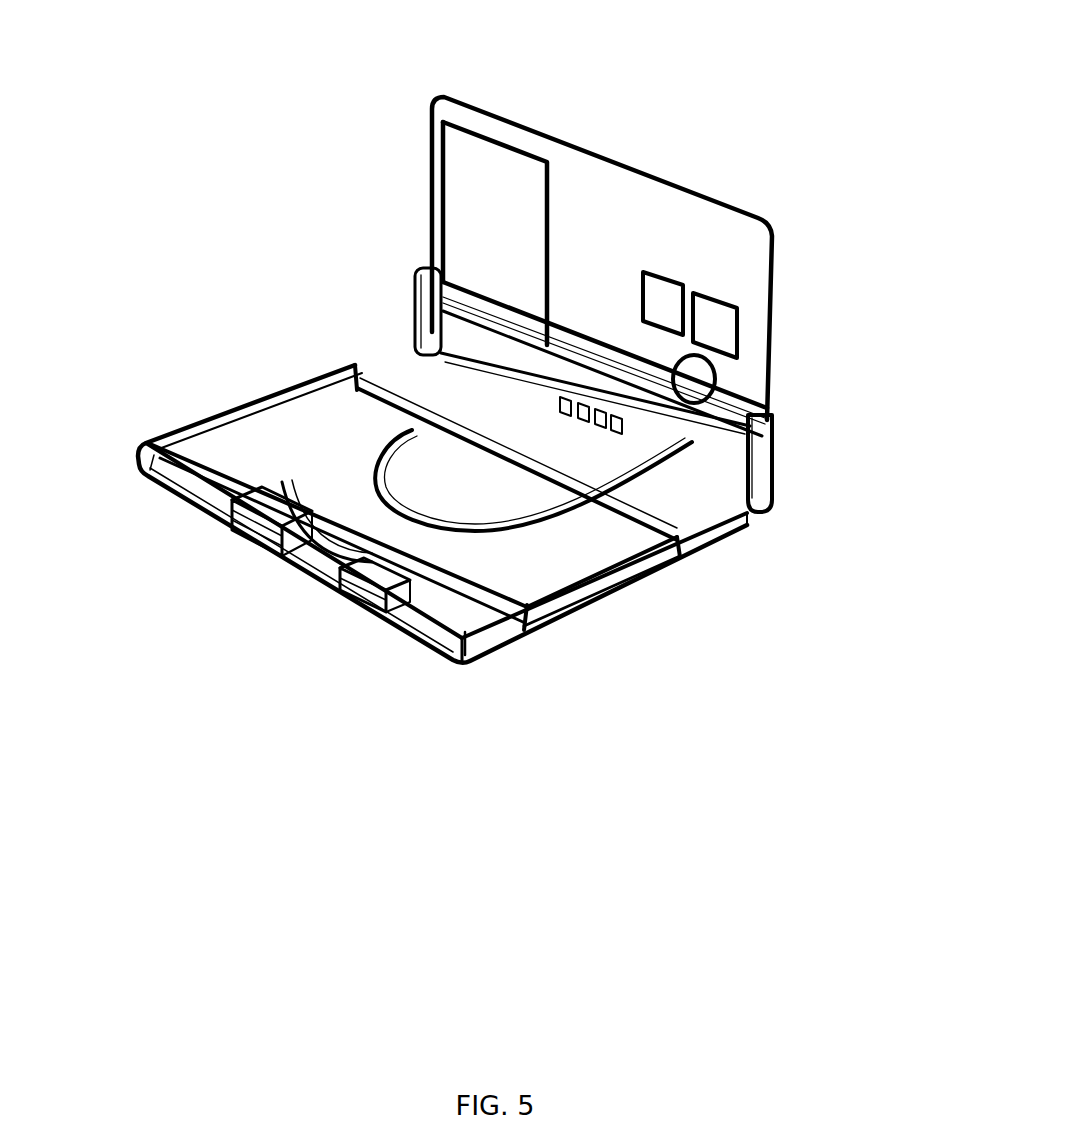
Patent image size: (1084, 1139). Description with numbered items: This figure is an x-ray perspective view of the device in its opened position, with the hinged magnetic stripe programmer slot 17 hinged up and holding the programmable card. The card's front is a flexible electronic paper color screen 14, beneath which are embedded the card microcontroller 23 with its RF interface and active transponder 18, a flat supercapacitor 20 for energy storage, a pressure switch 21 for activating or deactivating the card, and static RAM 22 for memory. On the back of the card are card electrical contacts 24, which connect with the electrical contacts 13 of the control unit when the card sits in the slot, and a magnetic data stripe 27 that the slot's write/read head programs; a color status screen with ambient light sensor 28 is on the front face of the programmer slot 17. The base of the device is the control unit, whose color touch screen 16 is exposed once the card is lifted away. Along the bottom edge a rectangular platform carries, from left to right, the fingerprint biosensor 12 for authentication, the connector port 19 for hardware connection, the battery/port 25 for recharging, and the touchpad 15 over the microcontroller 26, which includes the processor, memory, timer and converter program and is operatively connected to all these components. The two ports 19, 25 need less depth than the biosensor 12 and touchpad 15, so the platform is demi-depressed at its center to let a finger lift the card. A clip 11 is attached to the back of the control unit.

The clip 11 is at (352, 362).
The fingerprint biosensor 12 is at (212, 452).
The electrical contacts 13 is at (540, 395).
The flexible electronic paper color screen 14 is at (668, 247).
The touchpad 15 is at (483, 655).
The color touch screen 16 is at (615, 577).
The hinged magnetic stripe programmer slot 17 is at (772, 493).
The active transponder 18 is at (717, 330).
The connector port 19 is at (235, 528).
The supercapacitor 20 is at (491, 215).
The pressure switch 21 is at (713, 371).
The static RAM 22 is at (668, 305).
The card microcontroller 23 is at (818, 290).
The card electrical contacts 24 is at (730, 522).
The battery/port 25 is at (347, 597).
The microcontroller 26 is at (410, 637).
The magnetic data stripe 27 is at (713, 437).
The color status screen with ambient light sensor 28 is at (617, 350).